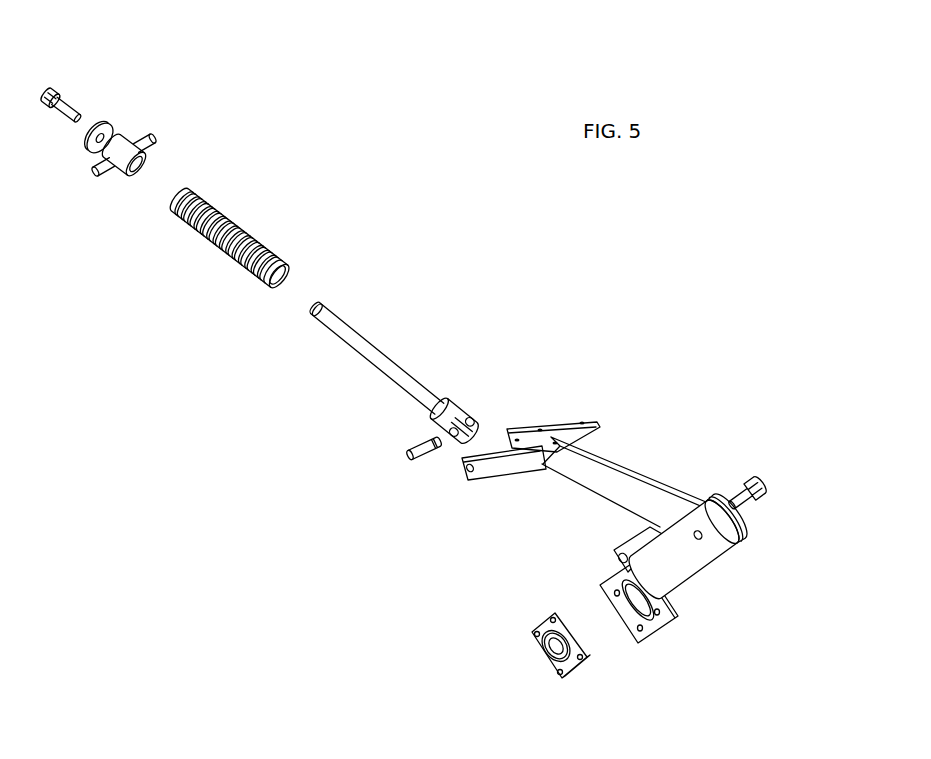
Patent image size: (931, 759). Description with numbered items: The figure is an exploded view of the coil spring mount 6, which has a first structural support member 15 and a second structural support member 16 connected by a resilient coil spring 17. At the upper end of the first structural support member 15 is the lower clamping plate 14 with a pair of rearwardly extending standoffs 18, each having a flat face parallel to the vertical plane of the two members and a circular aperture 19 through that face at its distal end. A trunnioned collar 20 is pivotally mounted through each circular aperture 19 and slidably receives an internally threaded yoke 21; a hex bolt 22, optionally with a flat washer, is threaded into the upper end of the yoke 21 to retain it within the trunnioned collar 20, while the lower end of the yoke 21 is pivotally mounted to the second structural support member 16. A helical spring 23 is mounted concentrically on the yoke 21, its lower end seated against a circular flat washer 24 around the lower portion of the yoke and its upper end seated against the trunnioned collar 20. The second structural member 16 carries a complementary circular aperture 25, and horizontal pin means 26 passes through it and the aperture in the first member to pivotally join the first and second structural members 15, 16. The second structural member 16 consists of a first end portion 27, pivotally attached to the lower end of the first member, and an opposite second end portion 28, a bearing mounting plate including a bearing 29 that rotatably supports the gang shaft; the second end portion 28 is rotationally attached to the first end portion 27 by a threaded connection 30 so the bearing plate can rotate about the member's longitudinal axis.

The coil spring mount 6 is at (358, 578).
The lower clamping plate 14 is at (597, 423).
The first structural support member 15 is at (706, 441).
The second structural support member 16 is at (712, 611).
The resilient coil spring 17 is at (258, 319).
The standoffs 18 is at (557, 422).
The circular aperture 19 is at (517, 443).
The trunnioned collar 20 is at (158, 137).
The internally threaded yoke 21 is at (388, 348).
The hex bolt 22 is at (68, 100).
The helical spring 23 is at (235, 220).
The circular flat washer 24 is at (453, 410).
The complementary circular aperture 25 is at (702, 530).
The horizontal pin means 26 is at (763, 485).
The first end portion 27 is at (707, 562).
The second end portion 28 is at (665, 620).
The bearing 29 is at (572, 670).
The threaded connection 30 is at (687, 614).